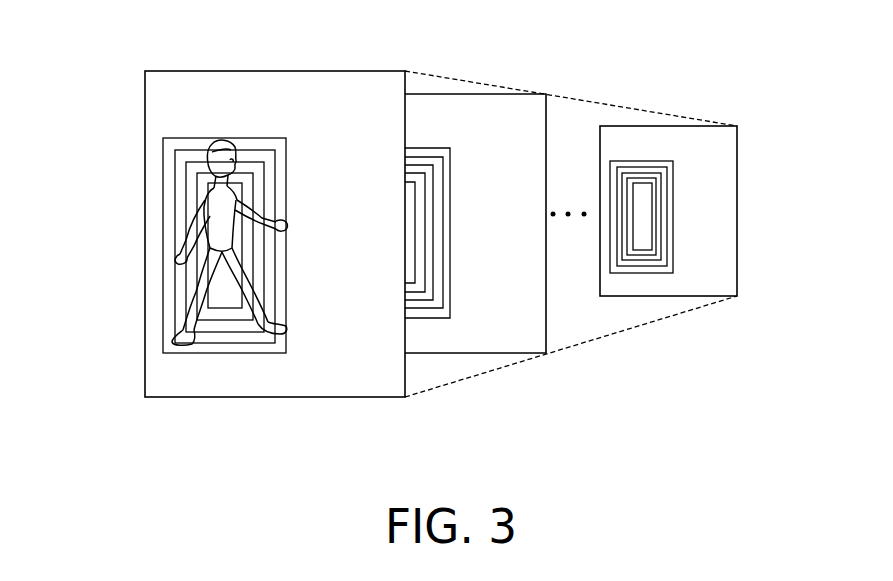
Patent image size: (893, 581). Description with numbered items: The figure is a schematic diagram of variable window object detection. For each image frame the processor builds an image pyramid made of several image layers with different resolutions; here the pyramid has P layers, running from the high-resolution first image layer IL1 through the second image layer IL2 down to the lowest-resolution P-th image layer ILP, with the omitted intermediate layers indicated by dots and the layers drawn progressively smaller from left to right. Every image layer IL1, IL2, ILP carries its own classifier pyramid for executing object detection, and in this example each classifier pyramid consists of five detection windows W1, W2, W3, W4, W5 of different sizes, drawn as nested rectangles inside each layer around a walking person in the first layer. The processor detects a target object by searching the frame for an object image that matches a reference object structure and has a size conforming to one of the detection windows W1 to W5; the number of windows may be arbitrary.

The first image layer IL1 is at (277, 70).
The second image layer IL2 is at (476, 93).
The P-th image layer ILP is at (677, 125).
The first detection window W1 is at (163, 302).
The second detection window W2 is at (174, 238).
The third detection window W3 is at (185, 214).
The fourth detection window W4 is at (196, 196).
The fifth detection window W5 is at (207, 184).